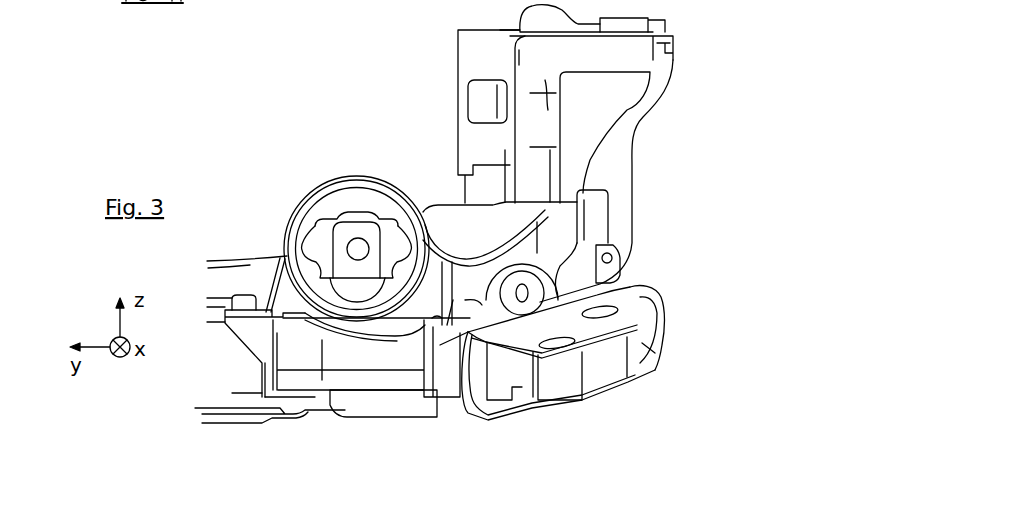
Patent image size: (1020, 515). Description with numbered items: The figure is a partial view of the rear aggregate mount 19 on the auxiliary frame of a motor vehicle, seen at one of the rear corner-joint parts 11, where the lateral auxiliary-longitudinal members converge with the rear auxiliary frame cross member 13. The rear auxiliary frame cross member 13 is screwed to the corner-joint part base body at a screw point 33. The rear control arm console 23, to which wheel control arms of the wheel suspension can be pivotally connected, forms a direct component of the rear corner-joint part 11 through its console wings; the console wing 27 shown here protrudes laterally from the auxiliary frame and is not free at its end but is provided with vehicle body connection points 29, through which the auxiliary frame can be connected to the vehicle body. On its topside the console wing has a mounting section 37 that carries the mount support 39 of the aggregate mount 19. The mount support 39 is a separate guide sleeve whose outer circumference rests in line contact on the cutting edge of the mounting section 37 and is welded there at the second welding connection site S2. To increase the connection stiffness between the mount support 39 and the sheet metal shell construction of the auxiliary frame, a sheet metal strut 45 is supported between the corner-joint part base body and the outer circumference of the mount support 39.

The rear corner-joint part 11 is at (440, 423).
The rear auxiliary frame cross member 13 is at (232, 393).
The aggregate mount 19 is at (358, 238).
The rear control arm console 23 is at (527, 291).
The console wing 27 is at (470, 330).
The vehicle body connection point 29 is at (602, 318).
The screw point 33 is at (245, 295).
The mounting section 37 is at (371, 320).
The mount support 39 is at (358, 183).
The sheet metal strut 45 is at (258, 262).
The second welding connection site S2 is at (470, 263).